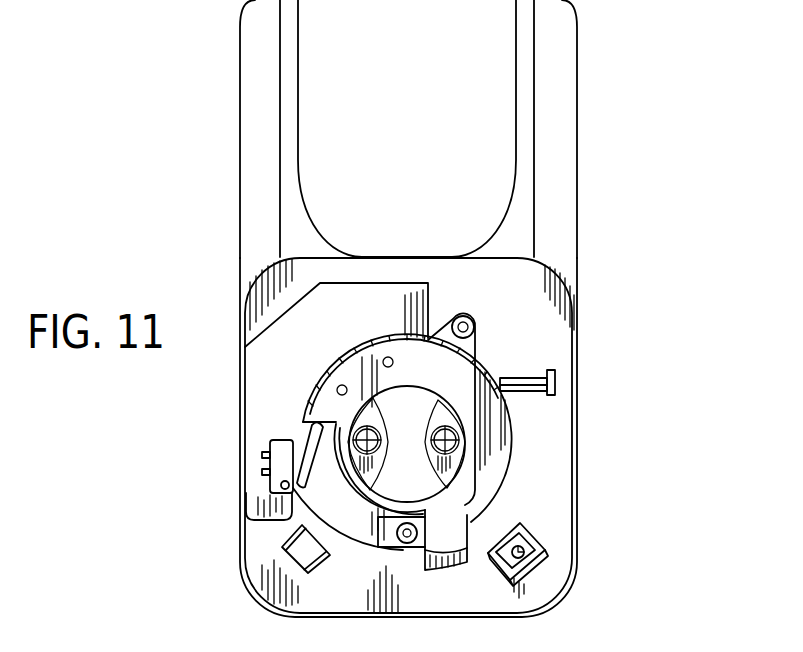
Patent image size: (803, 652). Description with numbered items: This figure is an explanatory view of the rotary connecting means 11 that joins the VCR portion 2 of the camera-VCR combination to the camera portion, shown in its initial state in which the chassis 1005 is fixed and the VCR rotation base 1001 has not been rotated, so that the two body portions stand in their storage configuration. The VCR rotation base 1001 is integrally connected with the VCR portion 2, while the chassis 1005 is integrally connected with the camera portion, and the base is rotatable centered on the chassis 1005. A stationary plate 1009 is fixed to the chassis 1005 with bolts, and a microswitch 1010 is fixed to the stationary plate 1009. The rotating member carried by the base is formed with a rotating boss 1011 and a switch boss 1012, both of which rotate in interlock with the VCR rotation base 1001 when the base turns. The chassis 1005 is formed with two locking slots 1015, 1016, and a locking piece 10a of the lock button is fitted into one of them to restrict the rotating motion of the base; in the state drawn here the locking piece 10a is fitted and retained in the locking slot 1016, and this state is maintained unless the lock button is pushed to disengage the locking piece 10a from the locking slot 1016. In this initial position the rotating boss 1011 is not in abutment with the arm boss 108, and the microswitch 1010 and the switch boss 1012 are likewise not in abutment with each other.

The VCR portion 2 is at (575, 153).
The connecting means 11 is at (226, 433).
The arm boss 108 is at (530, 376).
The VCR rotation base 1001 is at (571, 264).
The chassis 1005 is at (566, 405).
The stationary plate 1009 is at (350, 373).
The microswitch 1010 is at (268, 480).
The rotating boss 1011 is at (473, 318).
The switch boss 1012 is at (403, 550).
The locking slot 1015 is at (282, 560).
The locking slot 1016 is at (537, 537).
The locking piece 10a is at (537, 563).